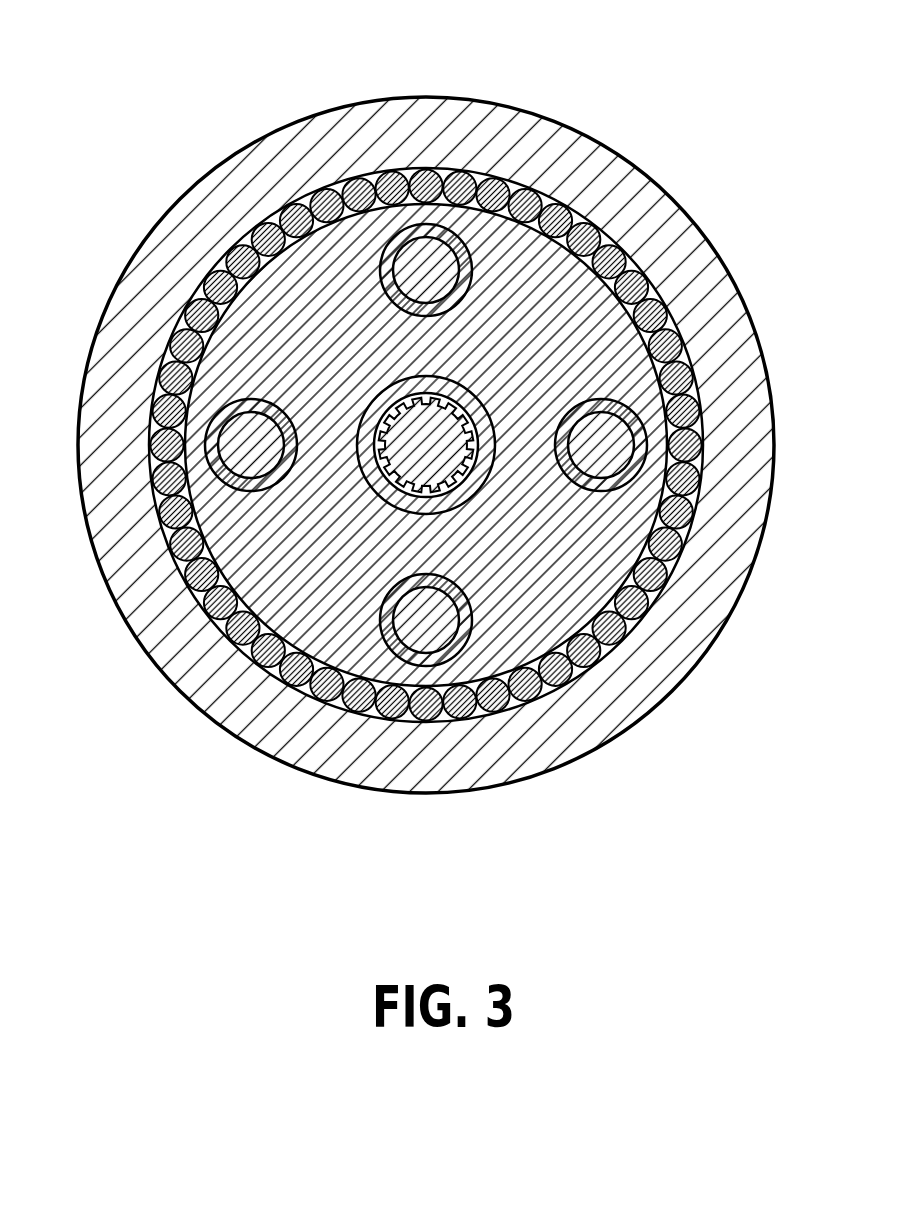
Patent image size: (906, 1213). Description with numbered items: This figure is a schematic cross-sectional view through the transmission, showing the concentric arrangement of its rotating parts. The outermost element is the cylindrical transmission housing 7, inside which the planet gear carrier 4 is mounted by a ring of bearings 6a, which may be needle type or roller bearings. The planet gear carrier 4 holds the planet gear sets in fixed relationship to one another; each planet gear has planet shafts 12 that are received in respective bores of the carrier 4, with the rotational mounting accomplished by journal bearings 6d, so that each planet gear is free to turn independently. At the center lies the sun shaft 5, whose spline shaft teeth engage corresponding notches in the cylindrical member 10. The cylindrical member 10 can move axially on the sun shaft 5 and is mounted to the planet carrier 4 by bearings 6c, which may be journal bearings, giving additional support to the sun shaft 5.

The cylindrical transmission housing 7 is at (385, 118).
The sun shaft 5 is at (410, 412).
The planet gear carrier 4 is at (537, 243).
The bearings 6a is at (223, 253).
The cylindrical member 10 is at (373, 405).
The planet shafts 12 is at (601, 424).
The journal bearings 6d is at (632, 476).
The bearings 6c is at (455, 487).